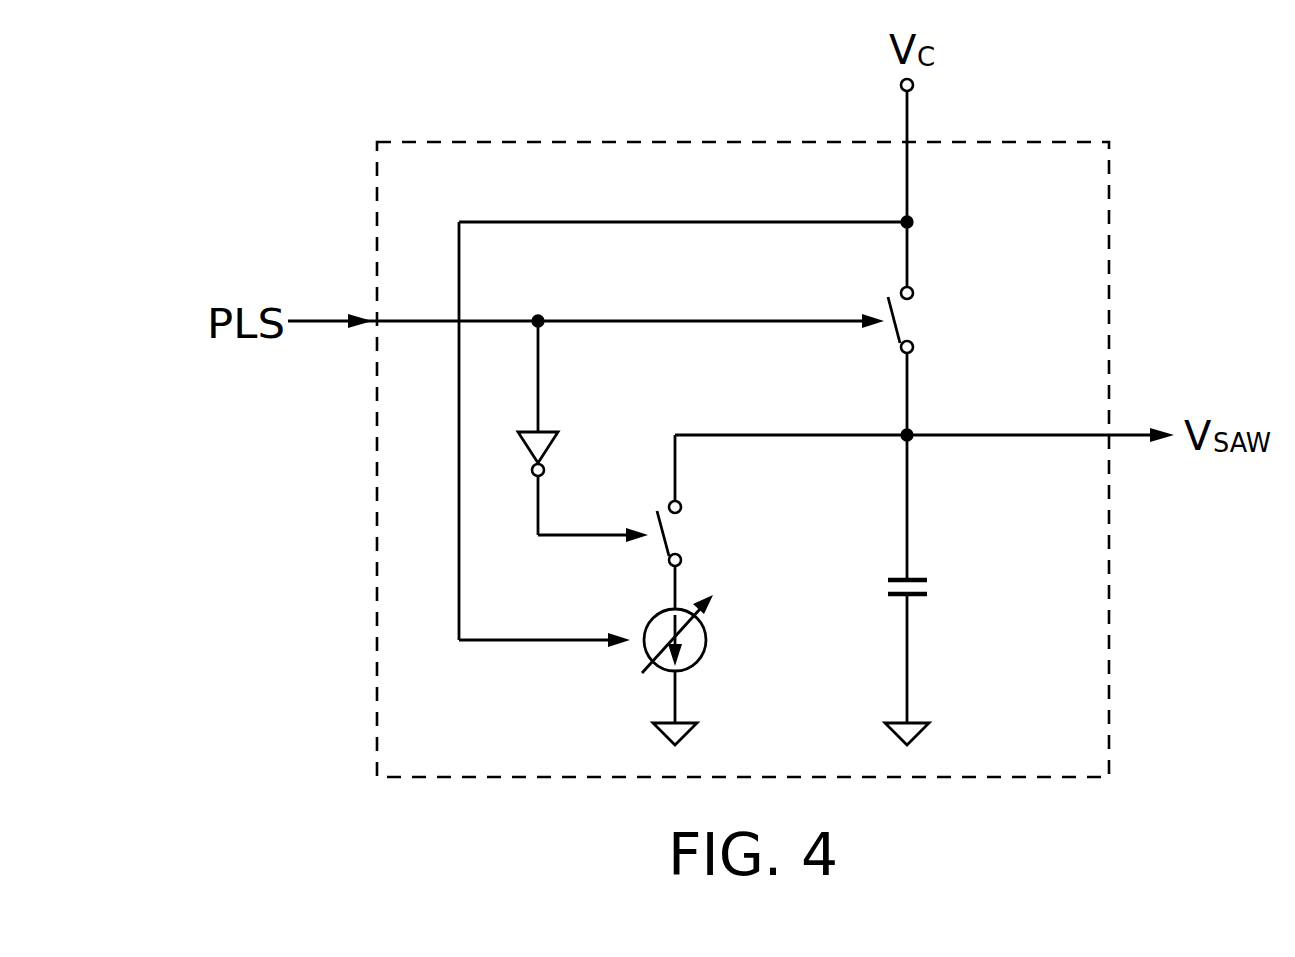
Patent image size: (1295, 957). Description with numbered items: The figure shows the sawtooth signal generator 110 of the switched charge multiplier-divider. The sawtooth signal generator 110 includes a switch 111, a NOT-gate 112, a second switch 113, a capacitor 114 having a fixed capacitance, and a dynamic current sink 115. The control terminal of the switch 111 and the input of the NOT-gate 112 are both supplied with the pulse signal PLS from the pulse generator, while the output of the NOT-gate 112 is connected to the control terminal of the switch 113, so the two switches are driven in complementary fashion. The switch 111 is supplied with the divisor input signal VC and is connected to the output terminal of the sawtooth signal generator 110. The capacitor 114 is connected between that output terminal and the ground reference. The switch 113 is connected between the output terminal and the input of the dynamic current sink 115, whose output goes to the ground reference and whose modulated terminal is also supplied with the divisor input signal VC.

The sawtooth signal generator 110 is at (1046, 142).
The switch 111 is at (924, 322).
The NOT-gate 112 is at (554, 420).
The switch 113 is at (690, 532).
The capacitor 114 is at (935, 591).
The dynamic current sink 115 is at (640, 676).